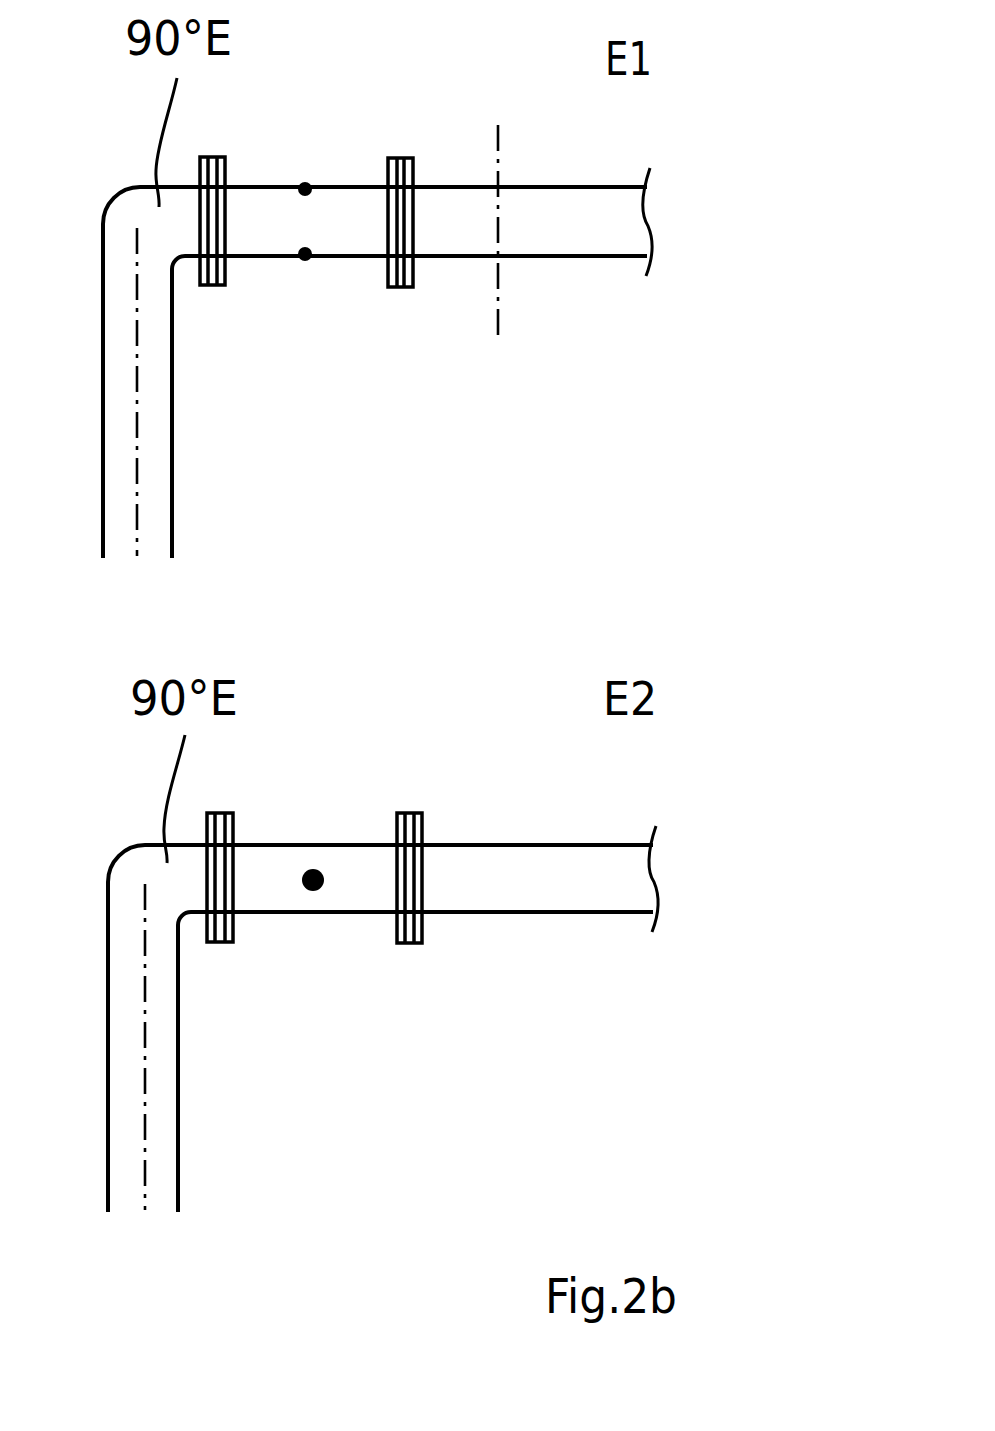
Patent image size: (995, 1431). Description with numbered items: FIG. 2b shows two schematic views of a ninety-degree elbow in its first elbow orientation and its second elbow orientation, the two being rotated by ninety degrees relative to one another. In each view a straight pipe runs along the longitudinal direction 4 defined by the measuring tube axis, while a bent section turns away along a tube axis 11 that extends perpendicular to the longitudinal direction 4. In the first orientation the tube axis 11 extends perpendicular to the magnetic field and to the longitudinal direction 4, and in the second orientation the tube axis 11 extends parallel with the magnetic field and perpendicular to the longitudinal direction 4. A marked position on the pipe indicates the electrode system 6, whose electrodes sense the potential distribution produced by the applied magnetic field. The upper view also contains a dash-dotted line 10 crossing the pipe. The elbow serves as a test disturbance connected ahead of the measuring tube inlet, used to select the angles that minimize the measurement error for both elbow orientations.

The longitudinal direction 4 is at (147, 224).
The electrode system 6 is at (305, 258).
The reference plane 10 is at (500, 266).
The tube axis 11 is at (147, 730).